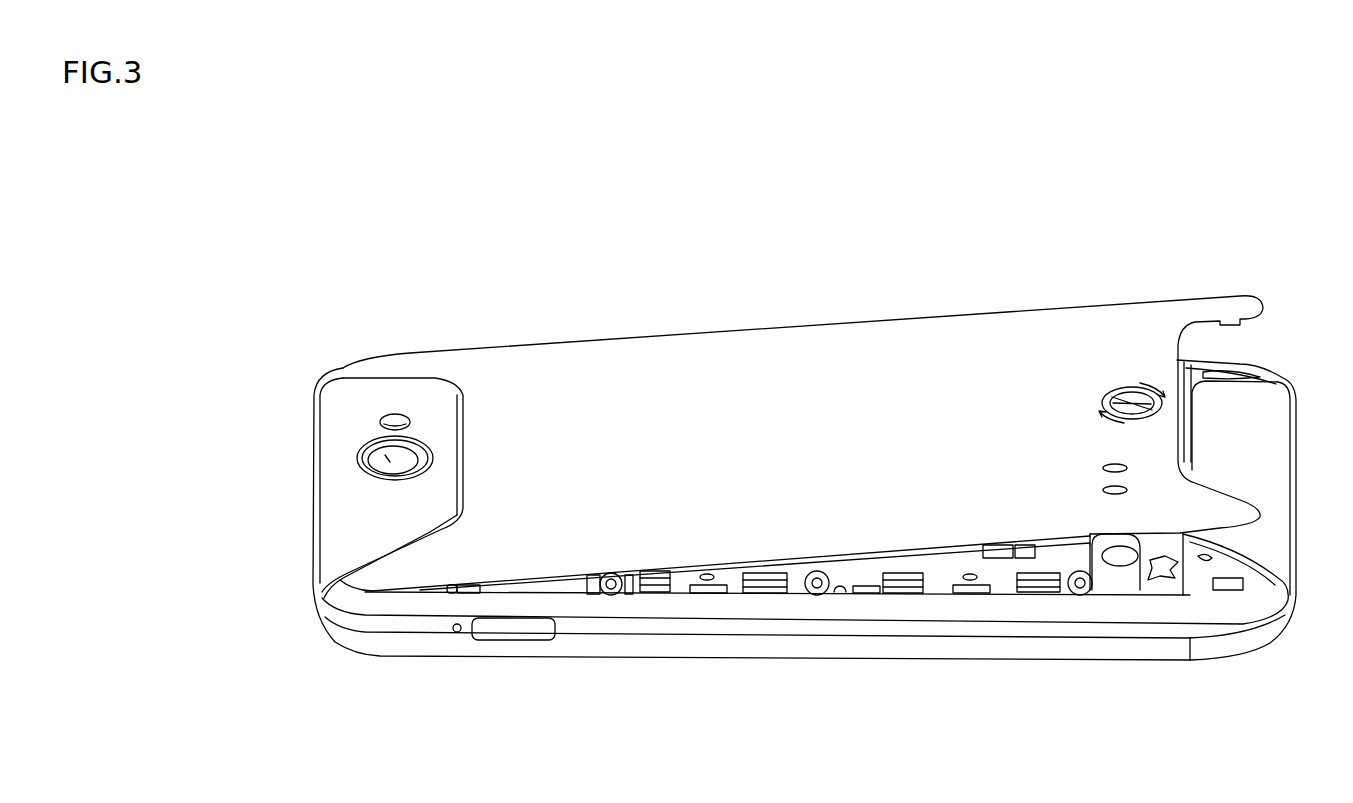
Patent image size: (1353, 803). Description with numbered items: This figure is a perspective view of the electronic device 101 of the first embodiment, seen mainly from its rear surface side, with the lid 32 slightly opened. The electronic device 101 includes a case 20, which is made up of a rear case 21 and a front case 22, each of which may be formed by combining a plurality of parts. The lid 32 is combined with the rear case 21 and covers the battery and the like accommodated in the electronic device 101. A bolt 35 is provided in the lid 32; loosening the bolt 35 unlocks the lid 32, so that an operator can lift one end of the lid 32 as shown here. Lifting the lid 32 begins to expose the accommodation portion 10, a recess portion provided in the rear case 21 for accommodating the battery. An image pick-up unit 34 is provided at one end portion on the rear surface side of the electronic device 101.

The electronic device 101 is at (451, 316).
The lid 32 is at (801, 368).
The image pick-up unit 34 is at (372, 444).
The bolt 35 is at (1132, 383).
The accommodation portion 10 is at (998, 558).
The case 20 is at (1282, 703).
The rear case 21 is at (1237, 607).
The front case 22 is at (1210, 648).